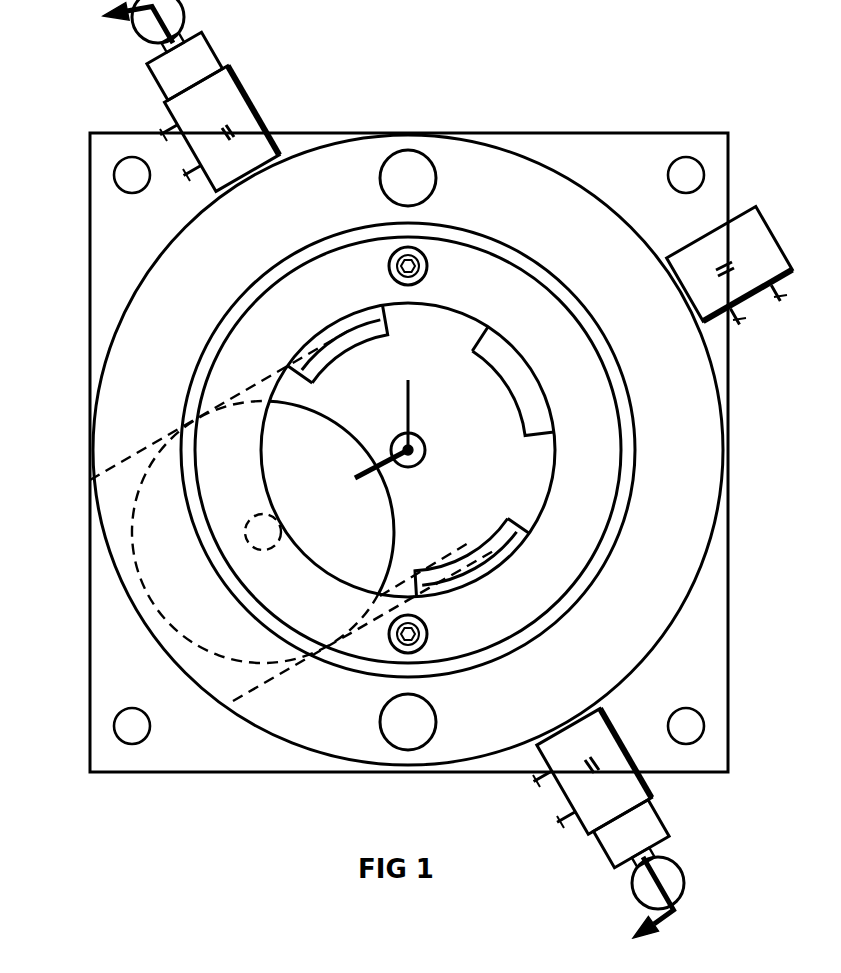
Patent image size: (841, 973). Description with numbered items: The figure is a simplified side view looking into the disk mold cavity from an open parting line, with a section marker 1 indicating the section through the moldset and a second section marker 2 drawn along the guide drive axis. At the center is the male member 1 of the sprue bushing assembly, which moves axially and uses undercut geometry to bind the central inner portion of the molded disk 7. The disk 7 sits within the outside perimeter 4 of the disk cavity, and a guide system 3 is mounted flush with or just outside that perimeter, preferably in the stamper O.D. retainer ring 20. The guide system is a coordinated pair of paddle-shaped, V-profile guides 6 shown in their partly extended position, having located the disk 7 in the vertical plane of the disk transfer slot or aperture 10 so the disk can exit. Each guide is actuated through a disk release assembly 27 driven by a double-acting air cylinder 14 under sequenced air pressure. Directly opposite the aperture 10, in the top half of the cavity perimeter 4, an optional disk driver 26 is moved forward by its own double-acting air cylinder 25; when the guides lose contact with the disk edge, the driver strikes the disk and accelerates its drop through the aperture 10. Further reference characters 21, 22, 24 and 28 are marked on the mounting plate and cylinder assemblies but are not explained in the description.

The male member 1 is at (424, 446).
The section line 2- 2 is at (374, 486).
The guide system 3 is at (212, 284).
The outside perimeter of the disk mold cavity 4 is at (470, 312).
The guides 6 is at (343, 343).
The molded disk 7 is at (360, 518).
The disk transfer slot or aperture 10 is at (122, 455).
The double-acting air cylinder 14 is at (190, 117).
The stamper O.D. retainer ring 20 is at (467, 272).
The fastening screws 21 is at (393, 263).
The mounting holes 22 is at (405, 165).
The terminal pins 24 is at (186, 176).
The double-acting air cylinder 25 is at (755, 240).
The disk driver 26 is at (530, 398).
The disk release assembly 27 is at (172, 80).
The cable fitting 28 is at (190, 33).